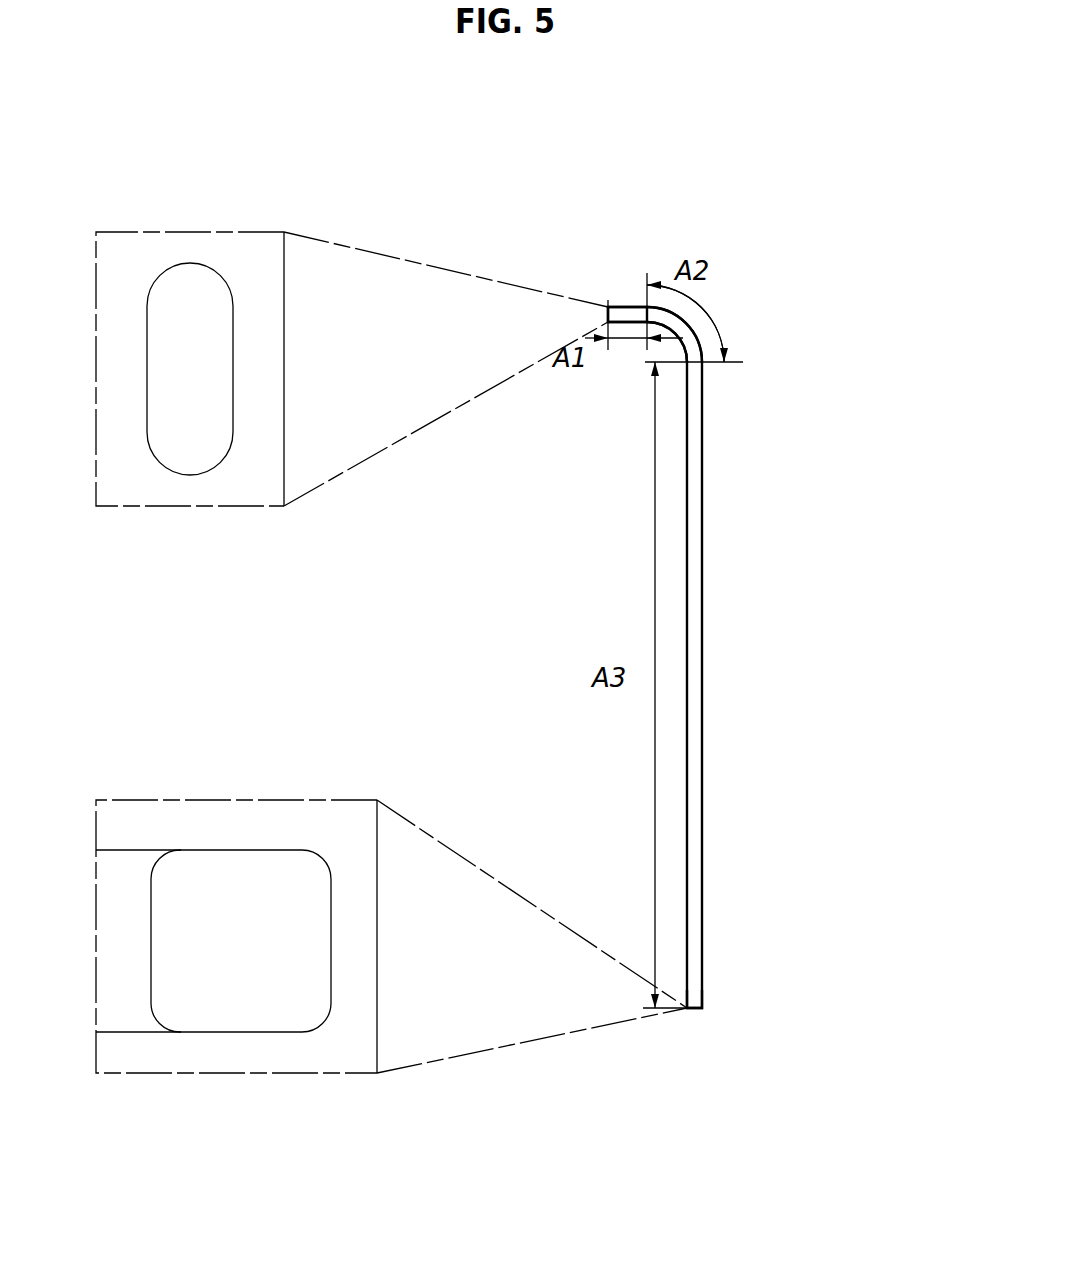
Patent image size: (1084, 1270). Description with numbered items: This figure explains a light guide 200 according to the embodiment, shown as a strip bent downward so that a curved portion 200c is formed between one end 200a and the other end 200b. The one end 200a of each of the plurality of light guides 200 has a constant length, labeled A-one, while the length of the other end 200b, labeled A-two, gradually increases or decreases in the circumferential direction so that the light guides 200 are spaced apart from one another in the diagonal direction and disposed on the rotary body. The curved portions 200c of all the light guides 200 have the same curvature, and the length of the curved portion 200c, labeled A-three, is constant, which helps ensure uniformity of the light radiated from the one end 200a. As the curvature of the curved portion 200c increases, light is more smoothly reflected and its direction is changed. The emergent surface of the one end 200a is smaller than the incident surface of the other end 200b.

The light guide 200 is at (712, 630).
The one end 200a is at (190, 298).
The other end 200b is at (243, 1000).
The curved portion 200c is at (683, 330).